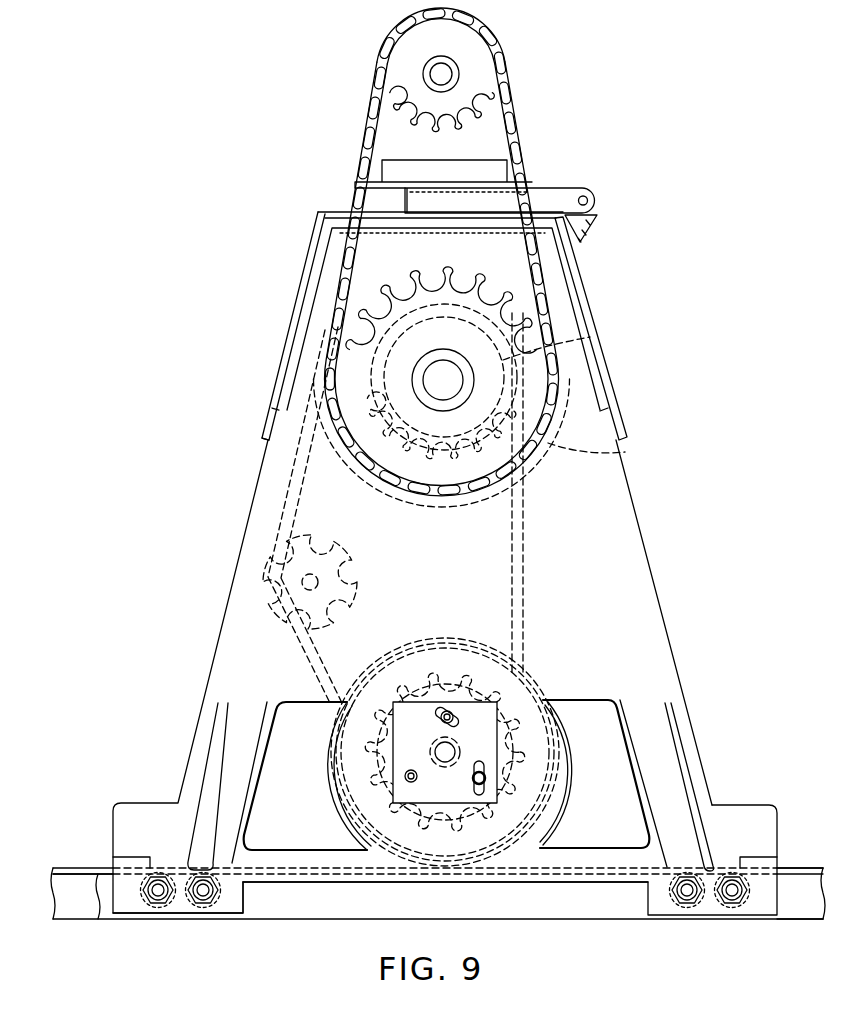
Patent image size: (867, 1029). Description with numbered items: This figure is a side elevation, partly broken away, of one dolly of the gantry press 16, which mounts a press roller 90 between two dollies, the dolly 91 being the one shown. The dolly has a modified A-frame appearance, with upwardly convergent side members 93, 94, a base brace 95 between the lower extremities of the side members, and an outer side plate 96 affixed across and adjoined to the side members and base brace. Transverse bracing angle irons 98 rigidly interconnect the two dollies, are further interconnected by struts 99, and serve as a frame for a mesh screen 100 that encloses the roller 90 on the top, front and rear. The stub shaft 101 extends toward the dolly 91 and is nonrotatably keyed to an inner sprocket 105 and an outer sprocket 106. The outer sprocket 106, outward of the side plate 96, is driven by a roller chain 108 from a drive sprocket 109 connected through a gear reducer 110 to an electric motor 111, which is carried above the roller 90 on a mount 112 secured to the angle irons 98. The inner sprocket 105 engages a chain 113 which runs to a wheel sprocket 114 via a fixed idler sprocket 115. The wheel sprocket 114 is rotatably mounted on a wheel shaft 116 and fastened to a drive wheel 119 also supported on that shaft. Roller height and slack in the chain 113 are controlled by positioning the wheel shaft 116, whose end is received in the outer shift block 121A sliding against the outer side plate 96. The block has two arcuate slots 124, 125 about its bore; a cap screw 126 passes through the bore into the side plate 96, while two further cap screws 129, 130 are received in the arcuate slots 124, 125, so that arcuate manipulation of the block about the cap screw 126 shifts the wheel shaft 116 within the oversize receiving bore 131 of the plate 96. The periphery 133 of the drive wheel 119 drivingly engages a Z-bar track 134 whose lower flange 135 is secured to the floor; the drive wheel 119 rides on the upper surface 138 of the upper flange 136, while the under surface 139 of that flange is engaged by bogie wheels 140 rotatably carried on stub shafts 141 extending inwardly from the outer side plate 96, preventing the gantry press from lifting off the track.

The gantry press 16 is at (698, 180).
The press roller 90 is at (600, 344).
The dolly 91 is at (663, 635).
The side member 93 is at (660, 737).
The side member 94 is at (222, 765).
The base brace 95 is at (582, 862).
The outer side plate 96 is at (590, 578).
The angle irons 98 is at (268, 440).
The struts 99 is at (288, 332).
The mesh screen 100 is at (333, 230).
The stub shaft 101 is at (440, 368).
The inner sprocket 105 is at (590, 337).
The outer sprocket 106 is at (518, 290).
The roller chain 108 is at (522, 184).
The drive sprocket 109 is at (478, 72).
The gear reducer 110 is at (490, 143).
The electric motor 111 is at (478, 30).
The mount 112 is at (365, 183).
The chain 113 is at (527, 607).
The wheel sprocket 114 is at (428, 672).
The fixed idler sprocket 115 is at (288, 575).
The wheel shaft 116 is at (452, 752).
The drive wheel 119 is at (549, 800).
The outer shift block 121A is at (496, 700).
The arcuate slot 124 is at (443, 712).
The arcuate slot 125 is at (484, 768).
The cap screw 126 is at (404, 776).
The cap screw 129 is at (440, 722).
The cap screw 130 is at (484, 777).
The oversize receiving bore 131 is at (411, 784).
The periphery 133 is at (541, 832).
The track 134 is at (71, 862).
The lower flange 135 is at (770, 920).
The upper flange 136 is at (88, 868).
The upper surface 138 is at (790, 868).
The under surface 139 is at (100, 912).
The bogie wheels 140 is at (208, 915).
The stub shafts 141 is at (732, 892).